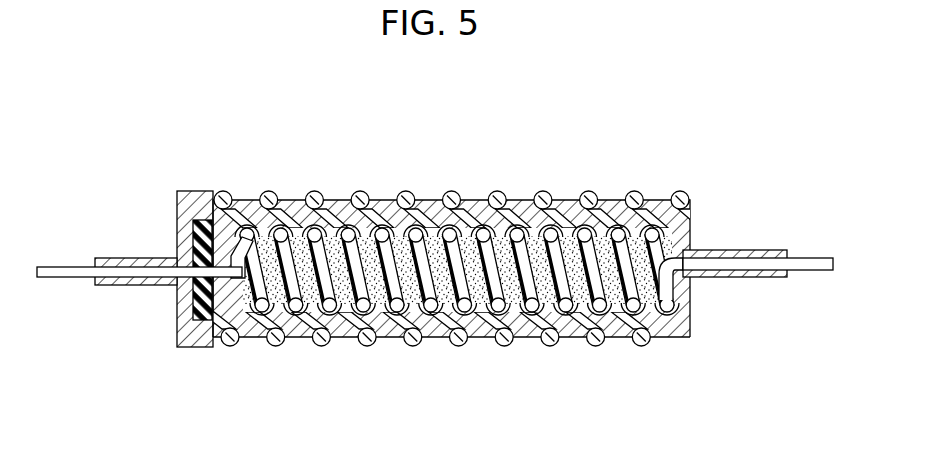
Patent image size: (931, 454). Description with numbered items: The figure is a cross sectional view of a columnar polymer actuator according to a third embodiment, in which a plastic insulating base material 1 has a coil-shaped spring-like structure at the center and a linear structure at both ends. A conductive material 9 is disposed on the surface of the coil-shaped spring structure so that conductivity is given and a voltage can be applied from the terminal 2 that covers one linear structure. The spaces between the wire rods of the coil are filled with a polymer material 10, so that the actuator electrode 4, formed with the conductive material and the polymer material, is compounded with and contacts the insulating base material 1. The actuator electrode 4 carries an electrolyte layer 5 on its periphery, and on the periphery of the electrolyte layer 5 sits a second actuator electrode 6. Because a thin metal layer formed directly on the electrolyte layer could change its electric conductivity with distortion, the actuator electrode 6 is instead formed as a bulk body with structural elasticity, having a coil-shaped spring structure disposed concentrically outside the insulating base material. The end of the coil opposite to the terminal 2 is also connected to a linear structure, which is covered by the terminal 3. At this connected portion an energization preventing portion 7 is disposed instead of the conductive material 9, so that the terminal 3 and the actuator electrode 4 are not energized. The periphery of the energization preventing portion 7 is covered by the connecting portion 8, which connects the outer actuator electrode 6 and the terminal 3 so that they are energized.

The insulating base material 1 is at (804, 262).
The terminal 2 is at (753, 249).
The terminal 3 is at (106, 259).
The actuator electrode 4 is at (690, 325).
The electrolyte layer 5 is at (690, 215).
The actuator electrode 6 is at (457, 269).
The energization preventing portion 7 is at (202, 320).
The connecting portion 8 is at (195, 203).
The conductive material 9 is at (551, 314).
The polymer material 10 is at (592, 308).